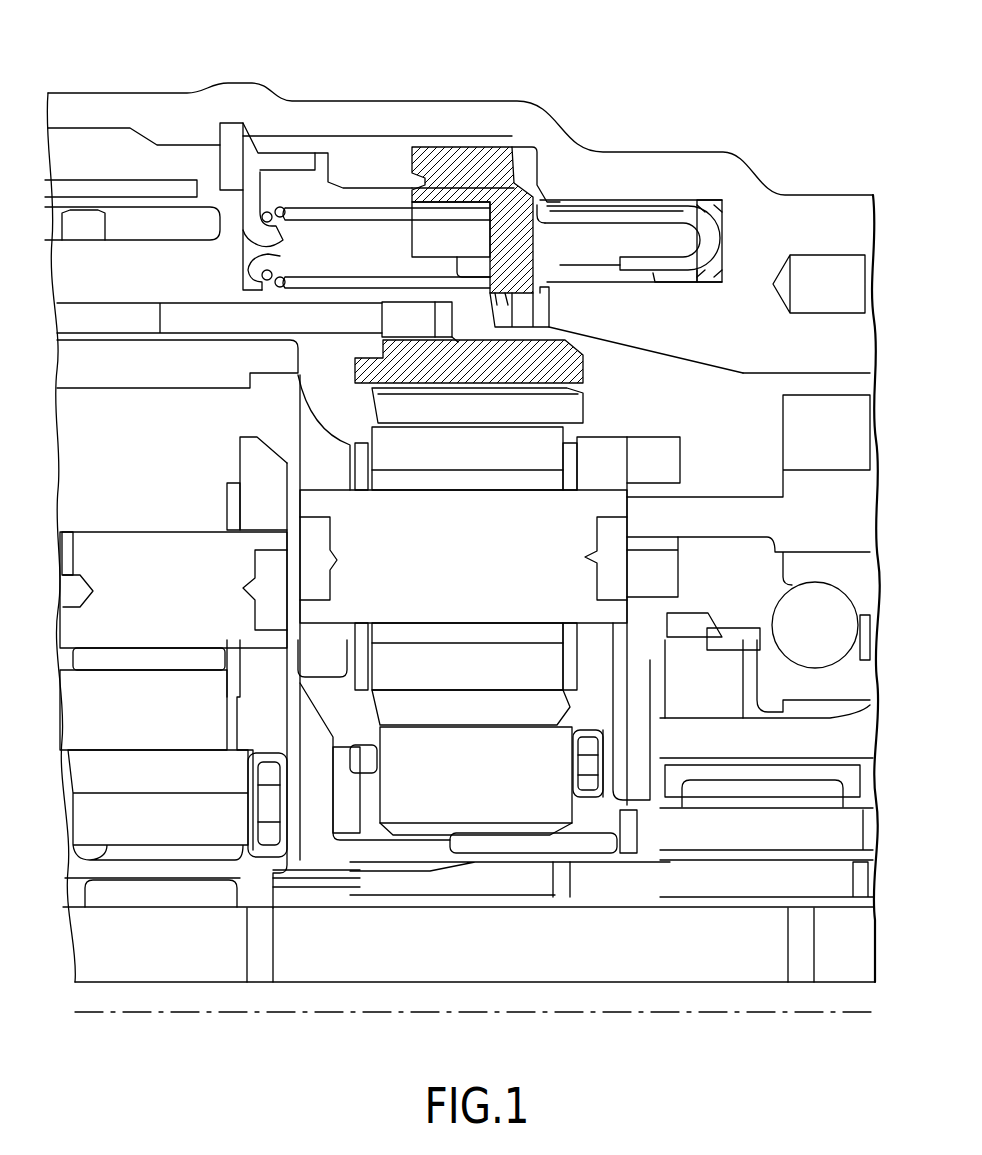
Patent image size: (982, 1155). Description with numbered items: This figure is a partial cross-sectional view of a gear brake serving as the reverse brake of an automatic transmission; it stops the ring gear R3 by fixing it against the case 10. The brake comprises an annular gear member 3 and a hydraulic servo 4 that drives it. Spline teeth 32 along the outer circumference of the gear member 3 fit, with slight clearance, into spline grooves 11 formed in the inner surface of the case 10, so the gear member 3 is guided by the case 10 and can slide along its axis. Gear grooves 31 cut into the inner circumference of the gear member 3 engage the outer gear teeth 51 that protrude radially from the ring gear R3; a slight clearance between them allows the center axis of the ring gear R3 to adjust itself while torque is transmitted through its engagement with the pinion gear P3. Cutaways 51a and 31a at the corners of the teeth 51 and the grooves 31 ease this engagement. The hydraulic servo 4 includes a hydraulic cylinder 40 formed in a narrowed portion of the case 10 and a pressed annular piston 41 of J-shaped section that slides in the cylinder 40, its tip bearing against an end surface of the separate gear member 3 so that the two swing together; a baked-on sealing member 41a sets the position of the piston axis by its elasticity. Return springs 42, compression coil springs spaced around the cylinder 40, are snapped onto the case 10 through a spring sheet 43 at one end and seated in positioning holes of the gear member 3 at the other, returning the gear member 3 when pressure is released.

The case 10 is at (763, 178).
The spline groove 11 is at (338, 135).
The gear member 3 is at (476, 147).
The spline teeth 32 is at (512, 150).
The hydraulic servo 4 is at (655, 195).
The annular piston 41 is at (597, 222).
The sealing member 41a is at (718, 228).
The hydraulic cylinder 40 is at (712, 290).
The return springs 42 is at (326, 210).
The spring sheet 43 is at (250, 280).
The outer gear teeth 51 is at (382, 320).
The cutaway 51a is at (445, 312).
The gear grooves 31 is at (540, 325).
The cutaway 31a is at (508, 292).
The pinion gear P3 is at (550, 438).
The ring gear R3 is at (598, 366).